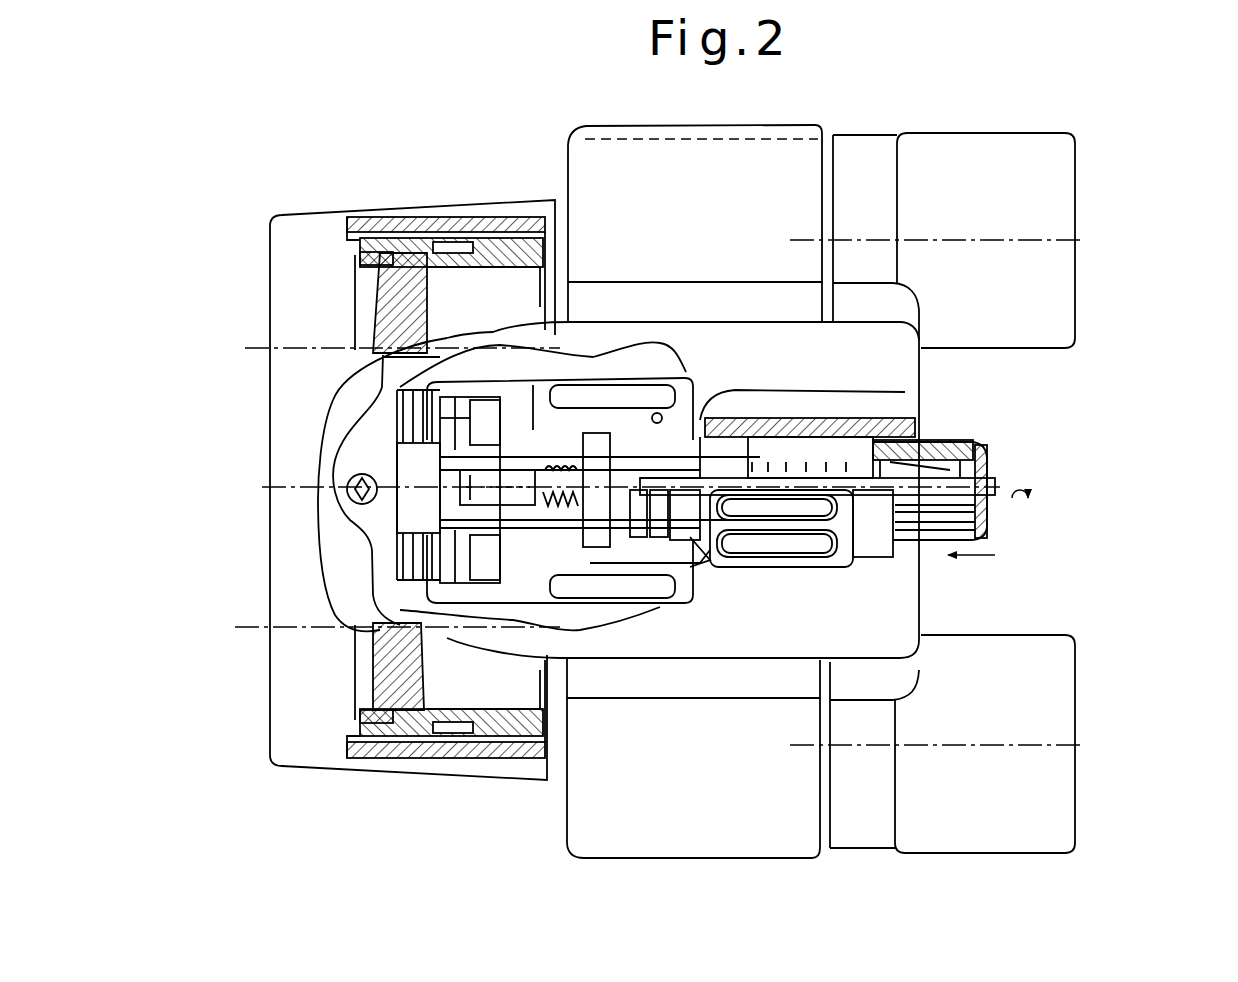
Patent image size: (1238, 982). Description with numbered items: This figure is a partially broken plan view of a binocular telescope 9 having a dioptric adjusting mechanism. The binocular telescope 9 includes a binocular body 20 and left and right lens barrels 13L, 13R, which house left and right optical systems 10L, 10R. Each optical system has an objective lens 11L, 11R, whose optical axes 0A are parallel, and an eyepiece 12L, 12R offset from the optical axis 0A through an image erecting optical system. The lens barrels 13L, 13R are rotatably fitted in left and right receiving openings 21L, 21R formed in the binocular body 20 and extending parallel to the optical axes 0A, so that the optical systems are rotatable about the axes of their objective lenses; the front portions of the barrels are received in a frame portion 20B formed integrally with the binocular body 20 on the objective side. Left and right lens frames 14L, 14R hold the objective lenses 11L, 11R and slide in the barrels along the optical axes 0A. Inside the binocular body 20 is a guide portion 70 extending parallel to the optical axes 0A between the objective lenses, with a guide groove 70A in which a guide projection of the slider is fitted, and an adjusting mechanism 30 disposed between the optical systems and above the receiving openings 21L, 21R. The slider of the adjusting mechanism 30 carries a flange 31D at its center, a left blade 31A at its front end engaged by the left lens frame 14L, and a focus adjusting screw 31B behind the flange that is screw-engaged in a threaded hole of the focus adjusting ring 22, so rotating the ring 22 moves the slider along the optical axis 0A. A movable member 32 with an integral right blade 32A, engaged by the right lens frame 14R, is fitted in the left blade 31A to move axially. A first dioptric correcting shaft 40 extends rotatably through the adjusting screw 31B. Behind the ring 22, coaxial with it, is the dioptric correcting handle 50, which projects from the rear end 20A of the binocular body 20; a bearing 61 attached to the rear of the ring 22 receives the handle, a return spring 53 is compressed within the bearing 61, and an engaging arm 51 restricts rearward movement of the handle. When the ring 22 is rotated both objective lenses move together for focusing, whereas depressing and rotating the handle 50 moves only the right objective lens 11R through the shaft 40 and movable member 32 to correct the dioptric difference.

The binocular telescope 9 is at (1130, 152).
The right optical system 10R is at (557, 136).
The left optical system 10L is at (546, 800).
The right eyepiece 12R is at (999, 137).
The left eyepiece 12L is at (985, 848).
The right objective lens 11R is at (380, 318).
The left objective lens 11L is at (375, 660).
The right lens barrel 13R is at (515, 230).
The left lens barrel 13L is at (495, 745).
The right lens frame 14R is at (446, 230).
The left lens frame 14L is at (425, 735).
The right receiving opening 21R is at (350, 230).
The left receiving opening 21L is at (345, 743).
The binocular body 20 is at (900, 305).
The rear end of the binocular body 20A is at (922, 600).
The frame portion 20B is at (313, 215).
The optical axis 0A is at (262, 352).
The adjusting mechanism 30 is at (1005, 483).
The left blade 31A is at (410, 573).
The focus adjusting screw 31B is at (605, 563).
The flange 31D is at (605, 440).
The movable member 32 is at (492, 398).
The right blade 32A is at (443, 418).
The first dioptric correcting shaft 40 is at (528, 470).
The dioptric correcting handle 50 is at (985, 470).
The engaging arm 51 is at (935, 462).
The return spring 53 is at (805, 465).
The focus adjusting ring 22 is at (780, 540).
The bearing 61 is at (872, 545).
The guide portion 70 is at (410, 517).
The guide groove 70A is at (335, 460).